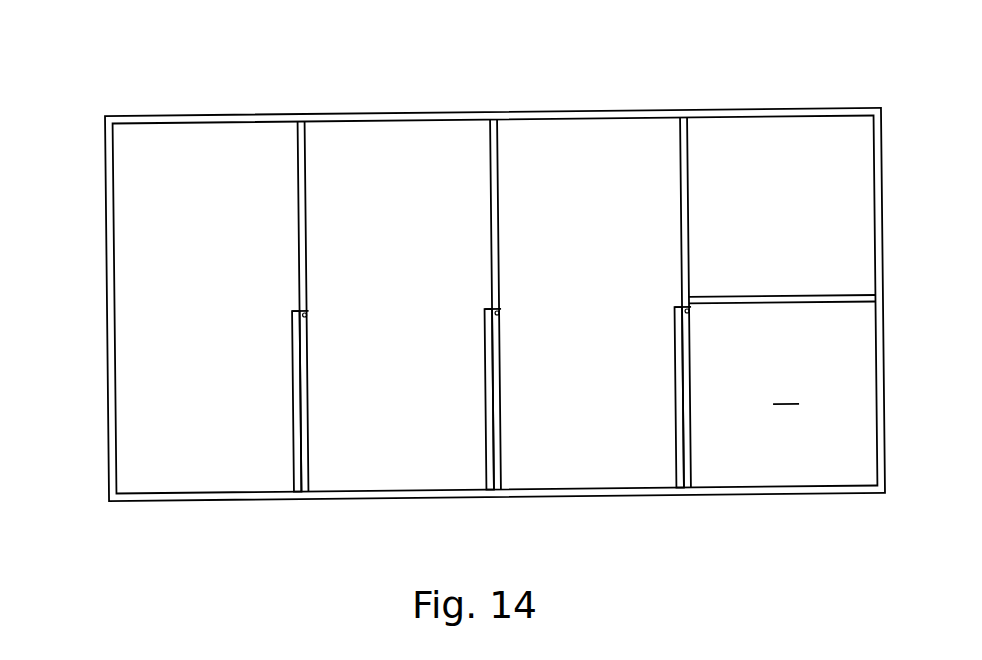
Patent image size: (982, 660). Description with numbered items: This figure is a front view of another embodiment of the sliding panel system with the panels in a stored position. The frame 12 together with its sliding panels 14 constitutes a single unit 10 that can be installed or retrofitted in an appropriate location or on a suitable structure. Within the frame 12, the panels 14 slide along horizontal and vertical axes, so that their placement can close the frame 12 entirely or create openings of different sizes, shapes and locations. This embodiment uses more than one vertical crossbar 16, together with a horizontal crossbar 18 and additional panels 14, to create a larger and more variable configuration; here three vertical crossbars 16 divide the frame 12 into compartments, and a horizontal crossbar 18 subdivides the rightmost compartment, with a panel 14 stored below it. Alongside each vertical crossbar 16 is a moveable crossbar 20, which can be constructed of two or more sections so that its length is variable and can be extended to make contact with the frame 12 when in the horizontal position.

The sliding panel system unit 10 is at (110, 41).
The frame 12 is at (840, 107).
The sliding panel 14 is at (783, 395).
The vertical crossbar 16 is at (298, 187).
The horizontal crossbar 18 is at (838, 293).
The moveable crossbar 20 is at (297, 420).